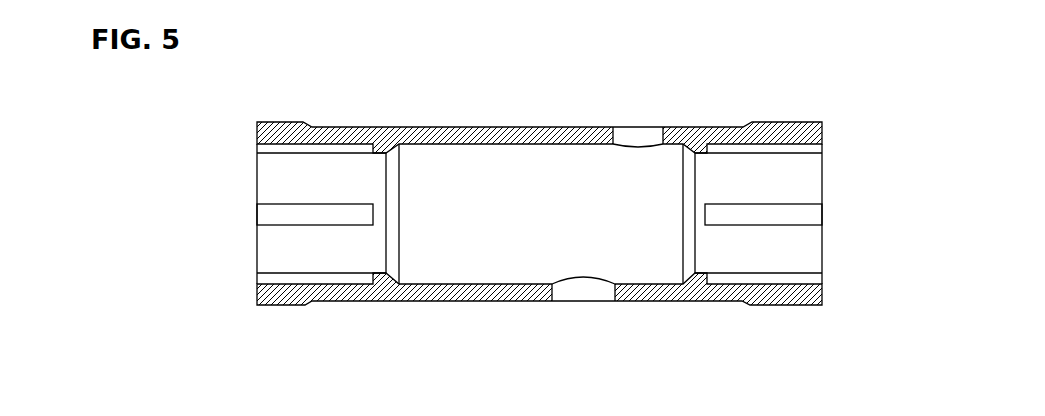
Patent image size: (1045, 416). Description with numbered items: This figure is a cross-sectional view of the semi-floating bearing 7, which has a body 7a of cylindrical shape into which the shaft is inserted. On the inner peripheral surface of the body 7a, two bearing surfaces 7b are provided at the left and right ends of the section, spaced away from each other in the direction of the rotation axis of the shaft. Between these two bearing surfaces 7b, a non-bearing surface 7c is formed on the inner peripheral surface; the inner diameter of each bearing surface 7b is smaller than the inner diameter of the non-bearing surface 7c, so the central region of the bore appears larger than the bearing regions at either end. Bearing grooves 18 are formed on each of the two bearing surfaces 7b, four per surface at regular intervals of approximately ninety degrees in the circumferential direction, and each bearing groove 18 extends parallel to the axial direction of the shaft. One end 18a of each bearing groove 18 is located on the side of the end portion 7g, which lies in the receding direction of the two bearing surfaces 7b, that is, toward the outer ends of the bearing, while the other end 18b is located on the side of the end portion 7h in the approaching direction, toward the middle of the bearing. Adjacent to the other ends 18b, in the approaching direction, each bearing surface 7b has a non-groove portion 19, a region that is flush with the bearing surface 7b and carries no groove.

The semi-floating bearing 7 is at (538, 204).
The body 7a is at (554, 118).
The bearing surface 7b is at (287, 272).
The non-bearing surface 7c is at (530, 284).
The end portion 7g is at (251, 310).
The end portion 7h is at (380, 273).
The bearing groove 18 is at (538, 204).
The one end of bearing groove 18a is at (257, 150).
The other end of bearing groove 18b is at (373, 152).
The non-groove portion 19 is at (395, 170).